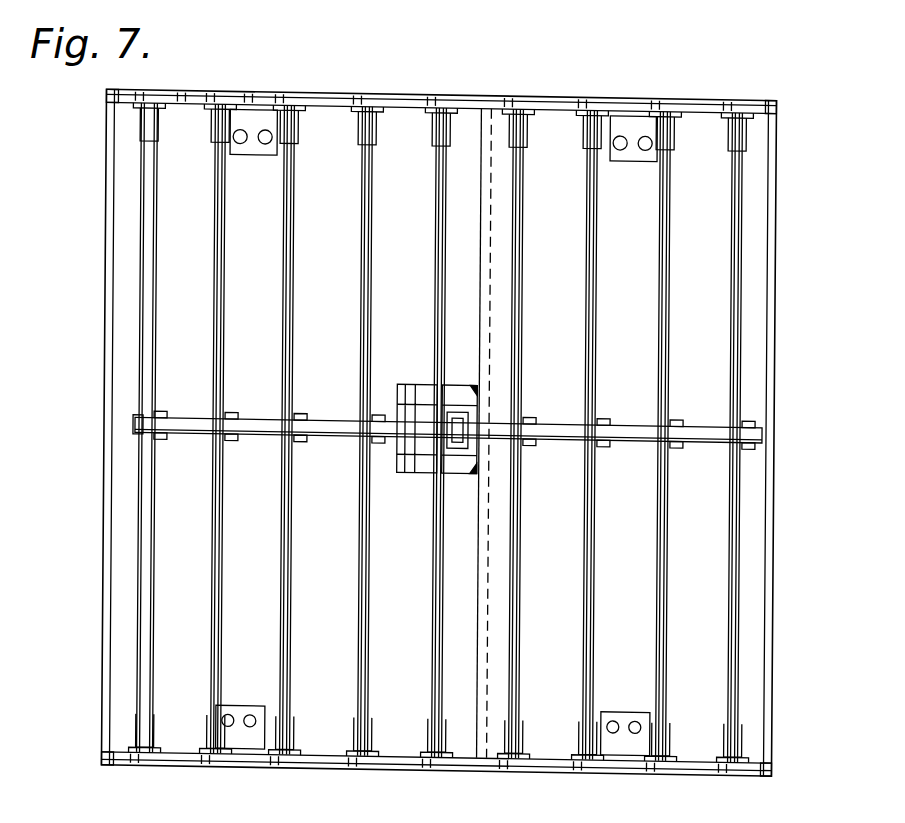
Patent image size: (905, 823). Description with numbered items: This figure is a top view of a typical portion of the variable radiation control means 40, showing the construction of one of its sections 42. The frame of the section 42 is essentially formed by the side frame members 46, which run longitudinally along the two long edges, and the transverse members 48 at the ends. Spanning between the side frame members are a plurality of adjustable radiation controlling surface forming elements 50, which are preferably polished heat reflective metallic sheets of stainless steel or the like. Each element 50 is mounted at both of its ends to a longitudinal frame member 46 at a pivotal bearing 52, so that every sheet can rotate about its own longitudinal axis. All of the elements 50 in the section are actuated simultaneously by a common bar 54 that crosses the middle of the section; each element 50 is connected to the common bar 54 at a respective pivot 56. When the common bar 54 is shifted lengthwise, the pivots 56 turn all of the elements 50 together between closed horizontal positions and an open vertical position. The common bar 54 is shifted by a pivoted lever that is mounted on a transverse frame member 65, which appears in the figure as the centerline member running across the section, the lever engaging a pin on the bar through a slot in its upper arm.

The variable radiation control means 40 is at (403, 96).
The section 42 is at (776, 99).
The side frame member 46 is at (318, 92).
The transverse member 48 is at (103, 374).
The adjustable radiation controlling surface forming element 50 is at (291, 333).
The pivotal bearing 52 is at (512, 100).
The common bar 54 is at (326, 438).
The pivot 56 is at (233, 444).
The transverse frame member 65 is at (491, 578).